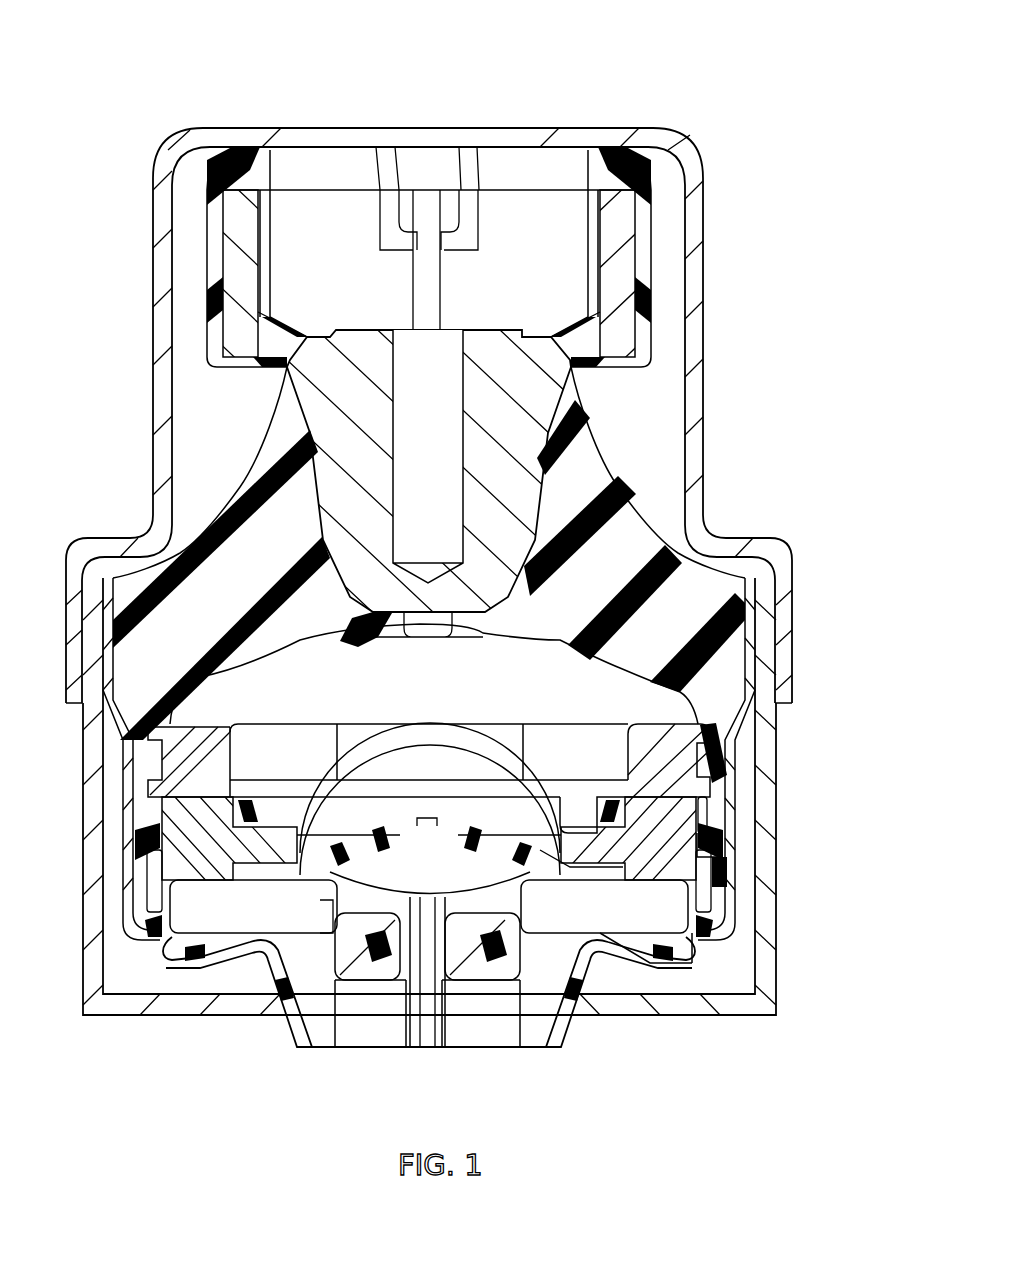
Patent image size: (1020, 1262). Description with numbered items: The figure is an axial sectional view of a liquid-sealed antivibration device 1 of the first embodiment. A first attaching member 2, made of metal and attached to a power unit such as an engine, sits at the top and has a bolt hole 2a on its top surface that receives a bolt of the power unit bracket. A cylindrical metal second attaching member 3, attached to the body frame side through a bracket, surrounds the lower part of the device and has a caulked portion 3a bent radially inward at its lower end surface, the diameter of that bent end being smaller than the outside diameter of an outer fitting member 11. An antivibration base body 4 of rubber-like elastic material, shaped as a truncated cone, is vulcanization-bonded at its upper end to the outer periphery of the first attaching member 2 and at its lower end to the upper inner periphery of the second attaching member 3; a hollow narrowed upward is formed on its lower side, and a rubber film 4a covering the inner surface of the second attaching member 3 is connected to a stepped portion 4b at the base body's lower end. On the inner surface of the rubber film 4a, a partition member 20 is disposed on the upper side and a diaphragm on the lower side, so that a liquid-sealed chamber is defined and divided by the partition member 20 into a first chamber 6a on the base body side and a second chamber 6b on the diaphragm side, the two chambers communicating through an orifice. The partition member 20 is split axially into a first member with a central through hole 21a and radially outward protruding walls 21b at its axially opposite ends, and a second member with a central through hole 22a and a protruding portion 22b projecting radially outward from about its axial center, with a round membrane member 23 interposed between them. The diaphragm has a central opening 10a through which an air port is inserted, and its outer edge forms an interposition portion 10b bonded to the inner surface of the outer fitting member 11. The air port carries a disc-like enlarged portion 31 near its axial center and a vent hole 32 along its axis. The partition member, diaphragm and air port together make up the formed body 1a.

The liquid-sealed antivibration device 1 is at (749, 78).
The formed body 1a is at (576, 1062).
The first attaching member 2 is at (492, 347).
The bolt hole 2a is at (463, 373).
The second attaching member 3 is at (120, 838).
The caulked portion 3a is at (141, 941).
The antivibration base body 4 is at (303, 610).
The rubber film 4a is at (708, 808).
The stepped portion 4b is at (693, 703).
The first chamber 6a is at (428, 706).
The second chamber 6b is at (273, 912).
The opening 10a is at (390, 940).
The interposition portion 10b is at (687, 898).
The outer fitting member 11 is at (717, 900).
The partition member 20 is at (354, 703).
The through hole 21a is at (460, 790).
The protruding walls 21b is at (705, 745).
The through hole 22a is at (437, 897).
The protruding portion 22b is at (717, 837).
The membrane member 23 is at (374, 840).
The enlarged portion 31 is at (457, 970).
The vent hole 32 is at (423, 1047).